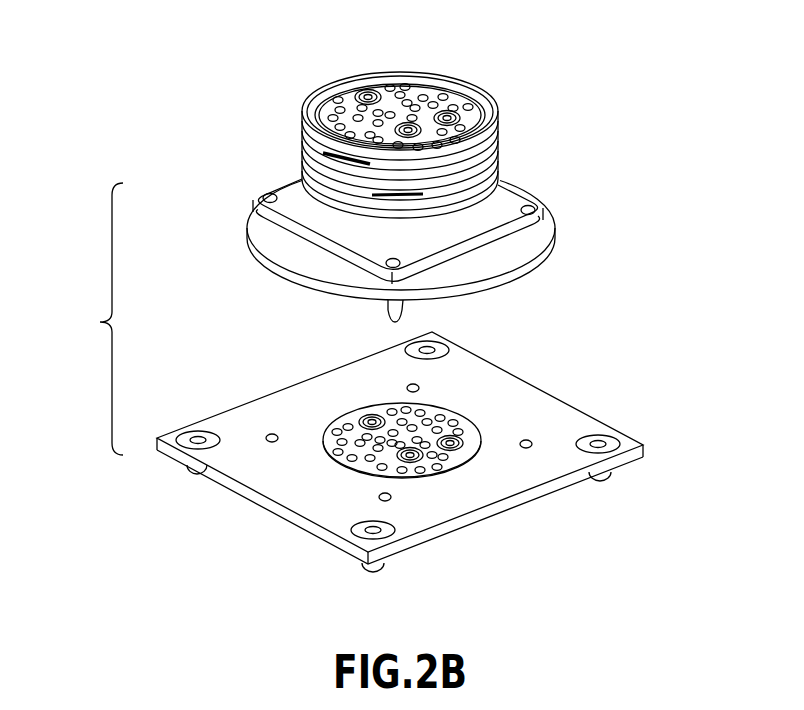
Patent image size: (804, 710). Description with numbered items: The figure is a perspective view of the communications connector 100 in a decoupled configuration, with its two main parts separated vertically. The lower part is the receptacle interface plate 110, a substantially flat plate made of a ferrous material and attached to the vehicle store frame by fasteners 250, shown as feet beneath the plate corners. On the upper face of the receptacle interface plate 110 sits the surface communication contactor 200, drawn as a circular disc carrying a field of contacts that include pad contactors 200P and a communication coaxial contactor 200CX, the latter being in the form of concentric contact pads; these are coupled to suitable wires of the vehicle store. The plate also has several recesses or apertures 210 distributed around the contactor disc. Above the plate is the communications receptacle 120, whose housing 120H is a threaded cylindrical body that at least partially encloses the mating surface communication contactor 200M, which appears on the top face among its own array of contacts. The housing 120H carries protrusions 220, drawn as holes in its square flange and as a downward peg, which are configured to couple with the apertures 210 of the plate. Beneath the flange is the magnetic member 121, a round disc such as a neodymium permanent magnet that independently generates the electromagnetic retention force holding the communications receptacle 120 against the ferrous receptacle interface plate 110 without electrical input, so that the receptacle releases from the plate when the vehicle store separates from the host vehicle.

The communications connector 100 is at (88, 319).
The receptacle interface plate 110 is at (624, 464).
The communications receptacle 120 is at (467, 90).
The housing 120H is at (497, 183).
The magnetic member 121 is at (535, 260).
The surface communication contactor 200 is at (368, 420).
The mating surface communication contactor 200M is at (366, 92).
The pad contactor 200P is at (461, 431).
The communication coaxial contactor 200CX is at (463, 441).
The recess or aperture 210 is at (417, 385).
The protrusion 220 is at (270, 195).
The fasteners 250 is at (377, 570).